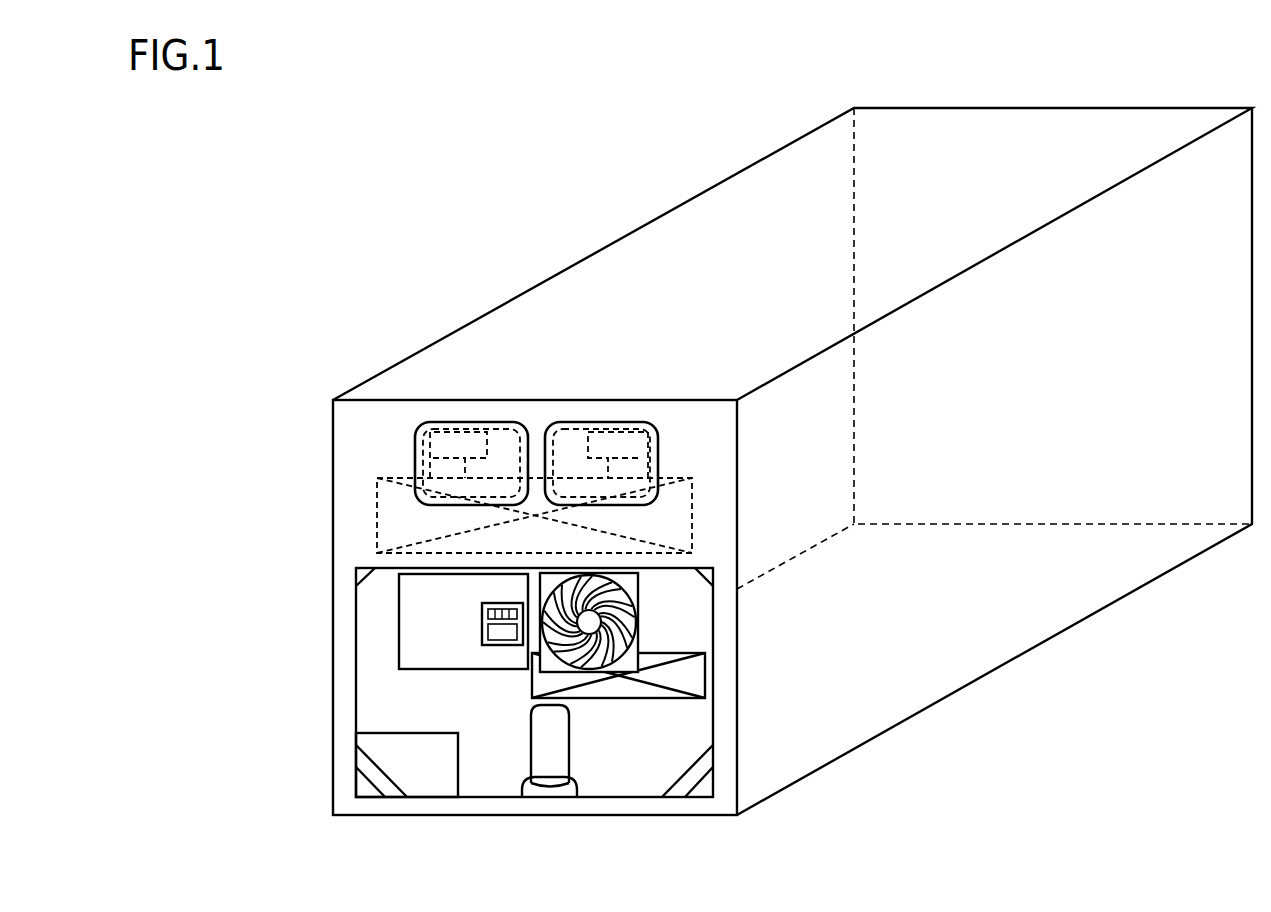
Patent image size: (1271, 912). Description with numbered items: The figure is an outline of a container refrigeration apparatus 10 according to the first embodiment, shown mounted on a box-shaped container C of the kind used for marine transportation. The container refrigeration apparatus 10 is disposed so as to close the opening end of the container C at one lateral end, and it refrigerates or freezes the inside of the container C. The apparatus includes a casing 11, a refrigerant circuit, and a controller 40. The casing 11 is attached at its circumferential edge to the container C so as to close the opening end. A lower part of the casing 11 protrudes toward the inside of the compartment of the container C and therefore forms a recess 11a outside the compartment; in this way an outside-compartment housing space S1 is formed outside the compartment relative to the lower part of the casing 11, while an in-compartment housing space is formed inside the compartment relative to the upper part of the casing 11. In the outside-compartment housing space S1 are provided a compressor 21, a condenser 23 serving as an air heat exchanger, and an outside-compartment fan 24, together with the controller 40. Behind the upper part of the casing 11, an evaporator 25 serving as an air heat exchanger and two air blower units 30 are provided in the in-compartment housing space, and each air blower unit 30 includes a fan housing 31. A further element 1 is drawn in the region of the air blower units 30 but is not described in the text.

The container C is at (585, 257).
The container refrigeration apparatus 10 is at (365, 348).
The casing 11 is at (330, 512).
The recess 11a is at (713, 722).
The air blower unit 30 is at (405, 433).
The fan housing 31 is at (415, 450).
The device 1 is at (430, 476).
The evaporator 25 is at (692, 515).
The controller 40 is at (402, 620).
The outside-compartment fan 24 is at (636, 610).
The condenser 23 is at (703, 676).
The compressor 21 is at (531, 725).
The outside-compartment housing space S1 is at (395, 707).